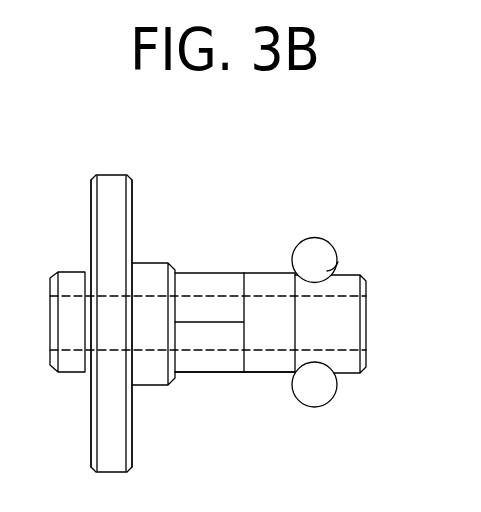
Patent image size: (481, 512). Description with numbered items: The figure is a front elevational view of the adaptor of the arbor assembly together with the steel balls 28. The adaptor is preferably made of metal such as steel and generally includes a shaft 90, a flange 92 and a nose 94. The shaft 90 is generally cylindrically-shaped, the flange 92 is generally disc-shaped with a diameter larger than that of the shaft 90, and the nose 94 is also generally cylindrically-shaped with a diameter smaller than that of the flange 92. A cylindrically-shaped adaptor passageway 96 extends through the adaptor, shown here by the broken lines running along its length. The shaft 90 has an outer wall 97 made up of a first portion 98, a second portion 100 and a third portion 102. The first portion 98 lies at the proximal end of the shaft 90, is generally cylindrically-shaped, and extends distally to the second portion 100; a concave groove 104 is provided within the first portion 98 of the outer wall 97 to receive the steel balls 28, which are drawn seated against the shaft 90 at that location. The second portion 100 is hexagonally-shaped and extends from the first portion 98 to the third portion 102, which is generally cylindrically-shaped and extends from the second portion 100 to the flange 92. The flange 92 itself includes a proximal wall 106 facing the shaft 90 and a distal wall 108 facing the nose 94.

The steel balls 28 is at (323, 253).
The shaft 90 is at (222, 373).
The flange 92 is at (110, 183).
The nose 94 is at (75, 270).
The adaptor passageway 96 is at (323, 327).
The outer wall 97 is at (235, 373).
The first portion 98 is at (273, 273).
The second portion 100 is at (212, 273).
The third portion 102 is at (150, 262).
The concave groove 104 is at (338, 262).
The proximal wall 106 is at (133, 196).
The distal wall 108 is at (91, 198).